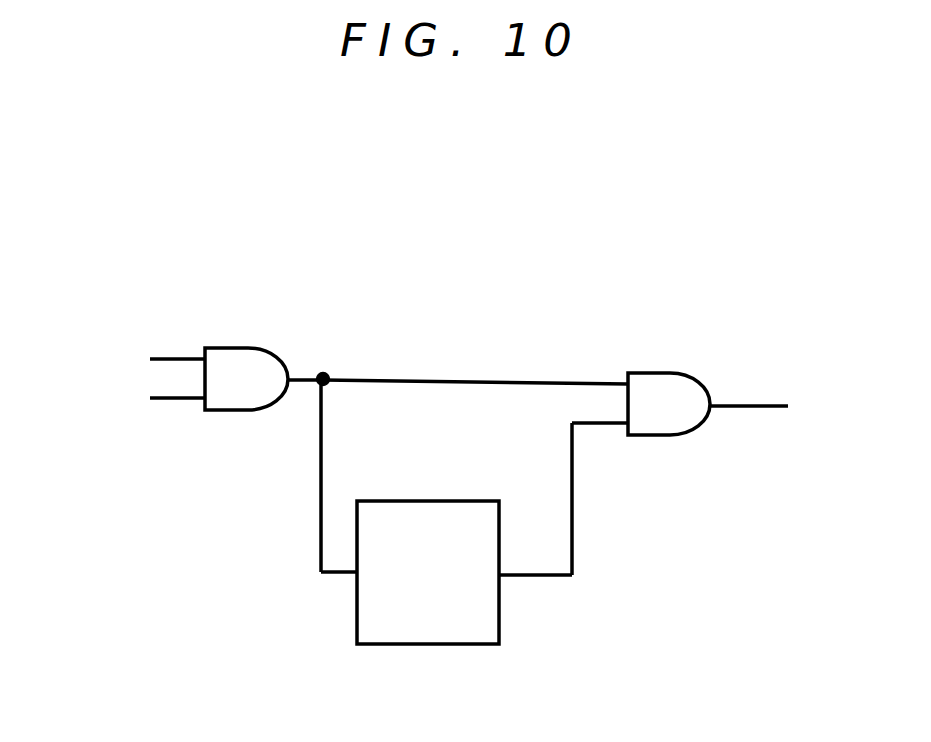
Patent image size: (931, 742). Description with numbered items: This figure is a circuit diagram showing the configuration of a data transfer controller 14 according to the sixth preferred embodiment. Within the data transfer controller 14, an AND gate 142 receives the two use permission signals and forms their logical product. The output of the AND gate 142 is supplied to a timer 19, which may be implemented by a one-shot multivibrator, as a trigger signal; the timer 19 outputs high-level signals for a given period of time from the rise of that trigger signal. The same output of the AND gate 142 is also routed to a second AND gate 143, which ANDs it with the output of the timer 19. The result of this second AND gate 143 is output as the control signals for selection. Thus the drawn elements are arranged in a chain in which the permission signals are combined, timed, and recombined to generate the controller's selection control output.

The data transfer controller 14 is at (102, 240).
The AND gate 142 is at (242, 363).
The AND gate 143 is at (677, 390).
The timer 19 is at (432, 645).